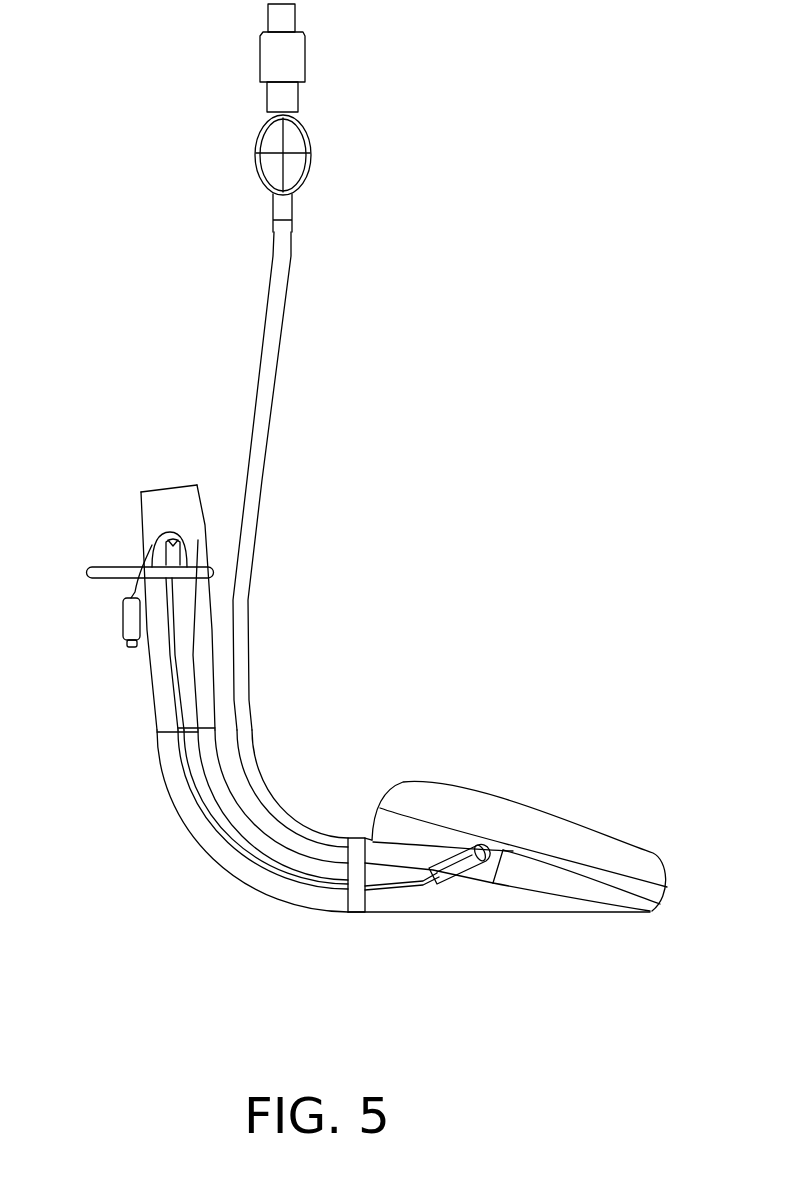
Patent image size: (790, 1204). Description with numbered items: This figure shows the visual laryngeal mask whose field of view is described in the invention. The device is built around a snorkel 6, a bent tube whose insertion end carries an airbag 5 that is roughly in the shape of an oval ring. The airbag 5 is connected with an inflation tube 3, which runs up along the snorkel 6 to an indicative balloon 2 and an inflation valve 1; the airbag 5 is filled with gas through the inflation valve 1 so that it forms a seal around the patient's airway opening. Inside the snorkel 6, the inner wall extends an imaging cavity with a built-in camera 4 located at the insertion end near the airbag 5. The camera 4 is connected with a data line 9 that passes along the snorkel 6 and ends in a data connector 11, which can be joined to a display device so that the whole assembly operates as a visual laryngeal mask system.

The inflation valve 1 is at (285, 18).
The indicative balloon 2 is at (292, 170).
The inflation tube 3 is at (274, 343).
The camera 4 is at (460, 867).
The airbag 5 is at (413, 797).
The snorkel 6 is at (220, 862).
The data line 9 is at (208, 803).
The data connector 11 is at (127, 622).